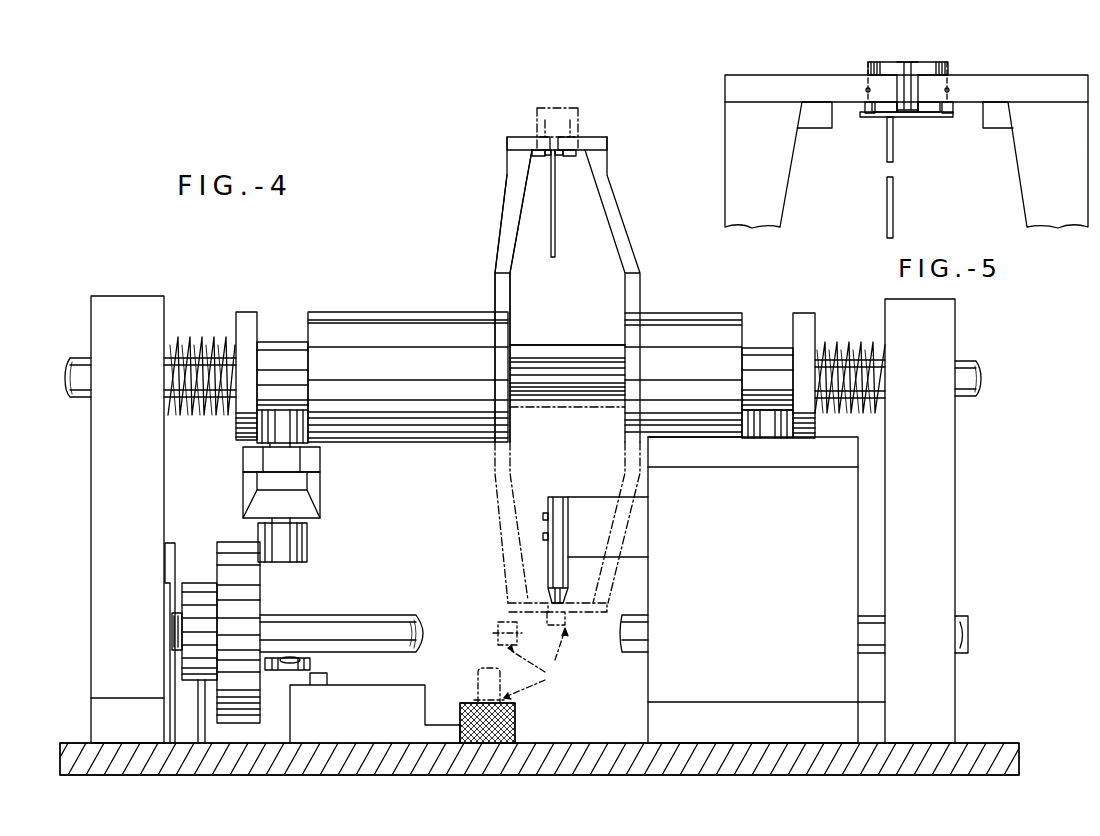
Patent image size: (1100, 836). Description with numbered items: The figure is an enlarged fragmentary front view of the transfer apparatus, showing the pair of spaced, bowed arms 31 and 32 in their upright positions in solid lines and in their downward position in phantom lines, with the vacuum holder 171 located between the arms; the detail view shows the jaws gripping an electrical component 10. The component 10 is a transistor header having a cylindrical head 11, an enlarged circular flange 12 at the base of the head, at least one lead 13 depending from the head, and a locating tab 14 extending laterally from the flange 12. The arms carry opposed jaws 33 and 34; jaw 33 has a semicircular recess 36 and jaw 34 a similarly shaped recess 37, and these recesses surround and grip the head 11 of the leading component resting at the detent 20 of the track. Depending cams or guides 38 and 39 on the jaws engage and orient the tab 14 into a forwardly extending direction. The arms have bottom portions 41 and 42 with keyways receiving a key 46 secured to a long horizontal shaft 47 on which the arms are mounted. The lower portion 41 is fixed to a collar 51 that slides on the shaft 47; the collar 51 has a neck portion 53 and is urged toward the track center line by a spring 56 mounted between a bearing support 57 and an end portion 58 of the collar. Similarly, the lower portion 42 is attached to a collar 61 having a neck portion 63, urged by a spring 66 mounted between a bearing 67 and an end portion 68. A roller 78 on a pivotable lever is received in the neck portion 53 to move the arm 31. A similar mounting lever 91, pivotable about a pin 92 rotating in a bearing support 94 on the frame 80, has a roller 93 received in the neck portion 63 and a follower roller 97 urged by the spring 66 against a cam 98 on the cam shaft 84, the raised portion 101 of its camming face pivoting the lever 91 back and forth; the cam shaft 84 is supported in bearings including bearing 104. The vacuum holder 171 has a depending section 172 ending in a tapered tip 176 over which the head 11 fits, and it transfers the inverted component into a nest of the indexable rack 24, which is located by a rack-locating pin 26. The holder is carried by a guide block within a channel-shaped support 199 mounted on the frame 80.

In FIG. 4, the electrical component 10 is at (537, 132).
In FIG. 5, the electrical component 10 is at (920, 58).
In FIG. 5, the cylindrical head 11 is at (902, 65).
In FIG. 5, the circular flange 12 is at (862, 115).
In FIG. 4, the lead 13 is at (552, 242).
In FIG. 5, the lead 13 is at (894, 213).
In FIG. 5, the locating tab 14 is at (910, 114).
In FIG. 4, the detent 20 is at (553, 118).
In FIG. 4, the indexable rack 24 is at (515, 712).
In FIG. 4, the rack-locating pin 26 is at (450, 725).
In FIG. 4, the right-hand arm 31 is at (618, 232).
In FIG. 5, the right-hand arm 31 is at (1040, 173).
In FIG. 4, the left arm 32 is at (505, 216).
In FIG. 5, the left arm 32 is at (778, 195).
In FIG. 4, the jaw 33 is at (578, 147).
In FIG. 5, the jaw 33 is at (967, 85).
In FIG. 4, the jaw 34 is at (545, 140).
In FIG. 5, the jaw 34 is at (838, 95).
In FIG. 5, the semicircular recess 36 is at (948, 85).
In FIG. 5, the recess 37 is at (866, 85).
In FIG. 4, the depending cam 38 is at (562, 157).
In FIG. 5, the depending cam 38 is at (935, 114).
In FIG. 4, the depending cam 39 is at (548, 157).
In FIG. 5, the depending cam 39 is at (885, 112).
In FIG. 4, the bottom portion 41 is at (632, 337).
In FIG. 4, the bottom portion 42 is at (500, 340).
In FIG. 4, the key 46 is at (563, 345).
In FIG. 4, the long shaft 47 is at (210, 378).
In FIG. 4, the collar 51 is at (690, 375).
In FIG. 4, the neck portion 53 is at (758, 345).
In FIG. 4, the spring 56 is at (835, 347).
In FIG. 4, the bearing support 57 is at (930, 436).
In FIG. 4, the end portion 58 is at (805, 322).
In FIG. 4, the collar 61 is at (347, 328).
In FIG. 4, the neck portion 63 is at (287, 345).
In FIG. 4, the spring 66 is at (208, 340).
In FIG. 4, the bearing 67 is at (102, 310).
In FIG. 4, the end portion 68 is at (245, 318).
In FIG. 4, the roller 78 is at (765, 423).
In FIG. 4, the frame 80 is at (957, 743).
In FIG. 4, the cam shaft 84 is at (355, 618).
In FIG. 4, the mounting lever 91 is at (318, 502).
In FIG. 4, the pin 92 is at (312, 665).
In FIG. 4, the roller 93 is at (306, 444).
In FIG. 4, the bearing support 94 is at (205, 700).
In FIG. 4, the follower roller 97 is at (300, 556).
In FIG. 4, the cam 98 is at (232, 548).
In FIG. 4, the raised portion 101 is at (265, 690).
In FIG. 4, the bearing 104 is at (170, 570).
In FIG. 4, the vacuum holder 171 is at (547, 505).
In FIG. 4, the depending section 172 is at (543, 528).
In FIG. 4, the tapered tip 176 is at (527, 643).
In FIG. 4, the channel-shaped support 199 is at (648, 678).